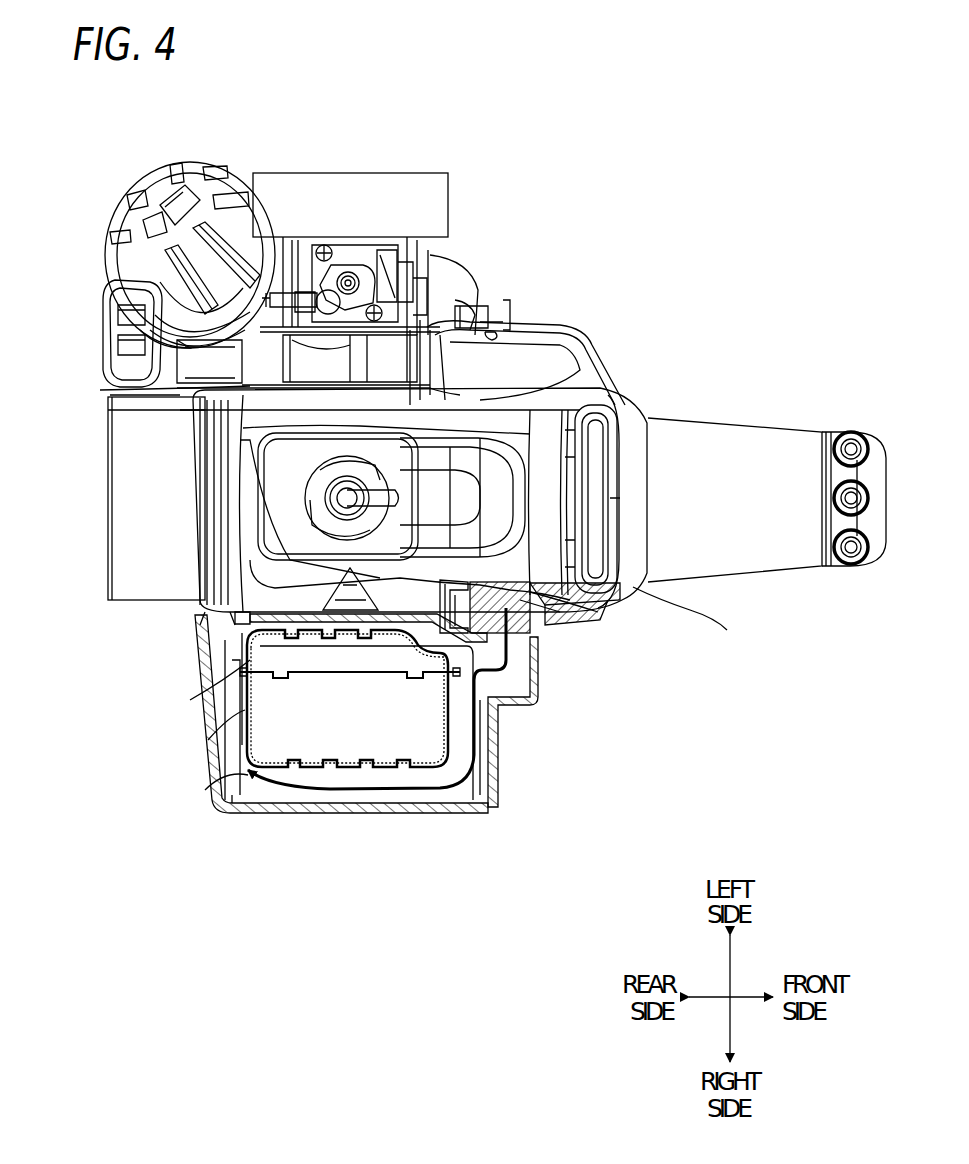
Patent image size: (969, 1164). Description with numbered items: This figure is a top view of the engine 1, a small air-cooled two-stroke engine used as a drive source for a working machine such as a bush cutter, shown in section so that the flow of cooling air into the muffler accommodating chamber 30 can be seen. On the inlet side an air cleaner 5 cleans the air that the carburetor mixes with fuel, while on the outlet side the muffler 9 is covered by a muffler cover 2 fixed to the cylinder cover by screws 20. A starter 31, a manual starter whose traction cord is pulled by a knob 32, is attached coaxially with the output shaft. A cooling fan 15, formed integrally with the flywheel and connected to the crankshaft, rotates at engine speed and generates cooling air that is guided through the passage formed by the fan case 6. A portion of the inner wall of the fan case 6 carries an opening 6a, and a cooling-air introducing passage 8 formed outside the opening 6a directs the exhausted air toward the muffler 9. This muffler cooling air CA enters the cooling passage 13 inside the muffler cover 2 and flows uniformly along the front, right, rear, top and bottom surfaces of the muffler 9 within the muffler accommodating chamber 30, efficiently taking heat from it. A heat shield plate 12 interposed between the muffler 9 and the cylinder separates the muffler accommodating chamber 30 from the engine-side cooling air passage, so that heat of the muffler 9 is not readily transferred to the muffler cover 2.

The engine 1 is at (779, 193).
The muffler cover 2 is at (266, 814).
The air cleaner 5 is at (290, 183).
The fan case 6 is at (625, 590).
The opening 6a is at (512, 644).
The cooling-air introducing passage 8 is at (537, 692).
The muffler 9 is at (249, 745).
The heat shield plate 12 is at (243, 660).
The cooling passage 13 is at (220, 716).
The cooling fan 15 is at (575, 622).
The screw 20 is at (330, 490).
The muffler accommodating chamber 30 is at (390, 798).
The starter 31 is at (113, 497).
The knob 32 is at (118, 305).
The muffler cooling air CA is at (343, 797).